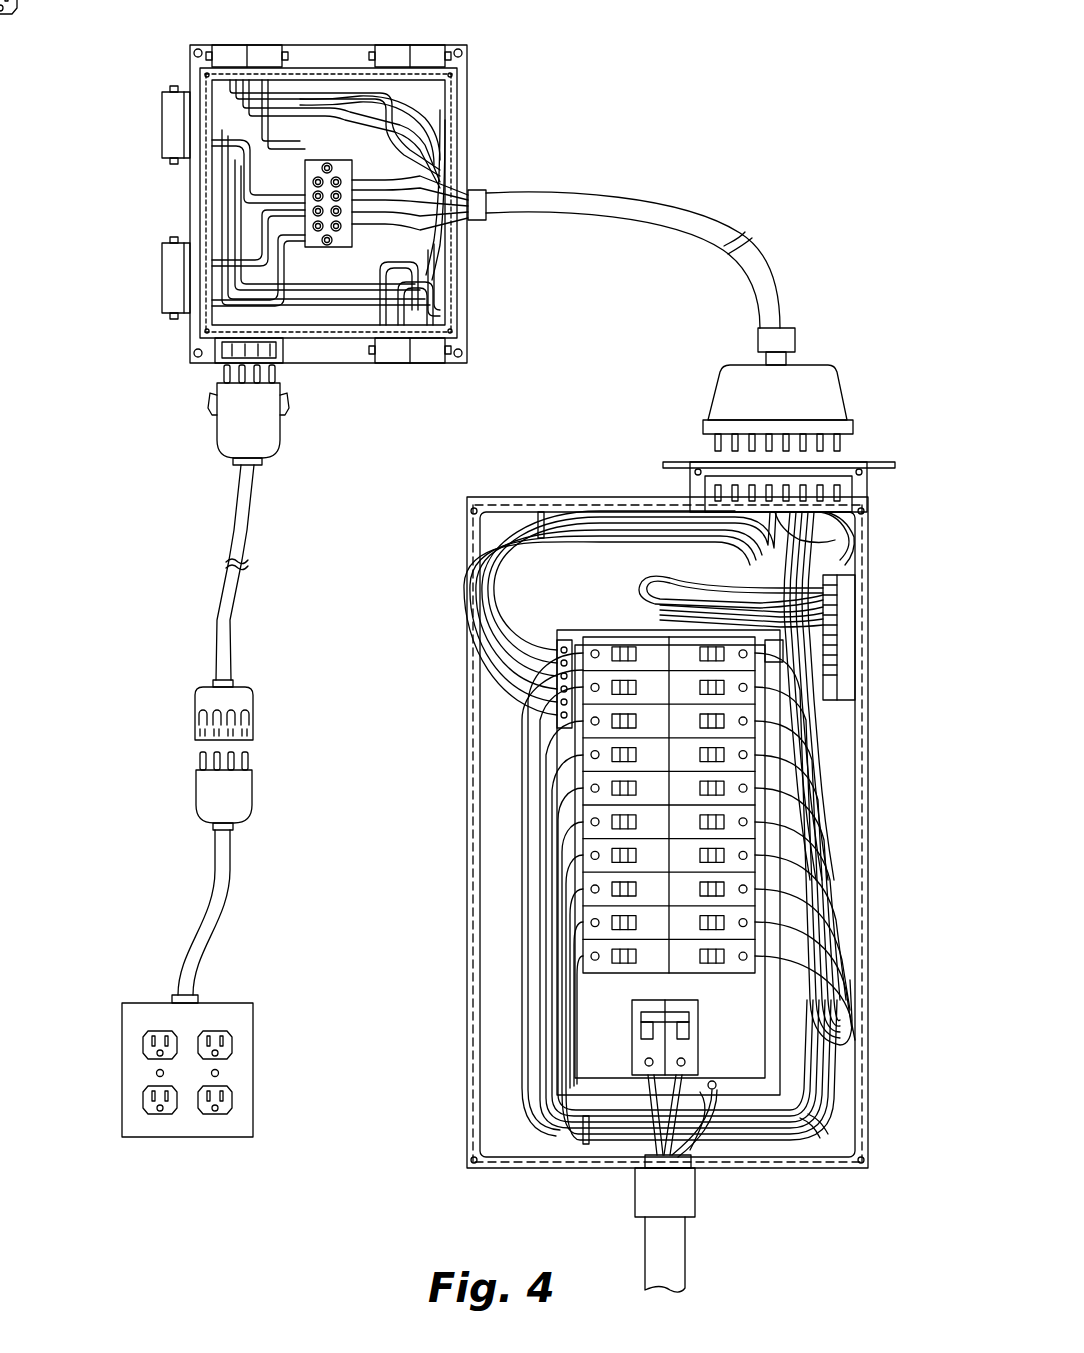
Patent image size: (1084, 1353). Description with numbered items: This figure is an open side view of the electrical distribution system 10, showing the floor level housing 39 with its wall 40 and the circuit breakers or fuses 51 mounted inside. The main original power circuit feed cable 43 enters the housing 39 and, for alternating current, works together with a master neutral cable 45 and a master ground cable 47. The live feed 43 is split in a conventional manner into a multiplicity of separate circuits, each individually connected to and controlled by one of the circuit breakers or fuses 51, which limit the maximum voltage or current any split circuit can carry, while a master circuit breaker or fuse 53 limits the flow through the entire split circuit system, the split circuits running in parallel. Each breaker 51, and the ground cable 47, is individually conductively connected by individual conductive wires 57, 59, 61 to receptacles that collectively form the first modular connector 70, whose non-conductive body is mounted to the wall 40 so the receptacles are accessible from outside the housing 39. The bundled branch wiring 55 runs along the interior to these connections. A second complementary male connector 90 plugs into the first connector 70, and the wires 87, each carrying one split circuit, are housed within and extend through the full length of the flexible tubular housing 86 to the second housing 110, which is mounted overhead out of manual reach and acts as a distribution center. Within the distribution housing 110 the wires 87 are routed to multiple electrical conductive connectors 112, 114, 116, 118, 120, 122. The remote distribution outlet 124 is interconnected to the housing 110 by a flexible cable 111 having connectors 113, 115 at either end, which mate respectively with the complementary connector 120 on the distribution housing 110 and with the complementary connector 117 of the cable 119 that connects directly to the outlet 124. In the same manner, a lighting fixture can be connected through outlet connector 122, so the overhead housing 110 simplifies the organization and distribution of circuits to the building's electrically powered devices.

The system 10 is at (818, 215).
The housing 39 is at (872, 806).
The wall 40 is at (522, 497).
The main original power circuit feed cable 43 is at (650, 1108).
The master neutral cable 45 is at (690, 1118).
The master ground cable 47 is at (707, 1112).
The circuit breakers or fuses 51 is at (624, 626).
The master circuit breaker or fuse 53 is at (630, 1022).
The branch conductors 55 is at (832, 1082).
The individual conductive wire 57 is at (802, 572).
The individual conductive wire 59 is at (822, 532).
The individual conductive wire 61 is at (612, 531).
The first modular connector 70 is at (858, 462).
The flexible tubular housing 86 is at (650, 200).
The wires 87 is at (466, 168).
The second complementary male connector 90 is at (843, 383).
The second housing 110 is at (466, 125).
The flexible cable 111 is at (232, 540).
The electrical conductive connector 112 is at (405, 44).
The connector 113 is at (225, 430).
The electrical conductive connector 114 is at (240, 44).
The connector 115 is at (200, 695).
The electrical conductive connector 116 is at (161, 122).
The complementary connector 117 is at (199, 806).
The electrical conductive connector 118 is at (161, 290).
The cable 119 is at (208, 922).
The complementary connector 120 is at (288, 362).
The outlet connector 122 is at (405, 366).
The multiple circuit electrical distribution outlet 124 is at (236, 1002).